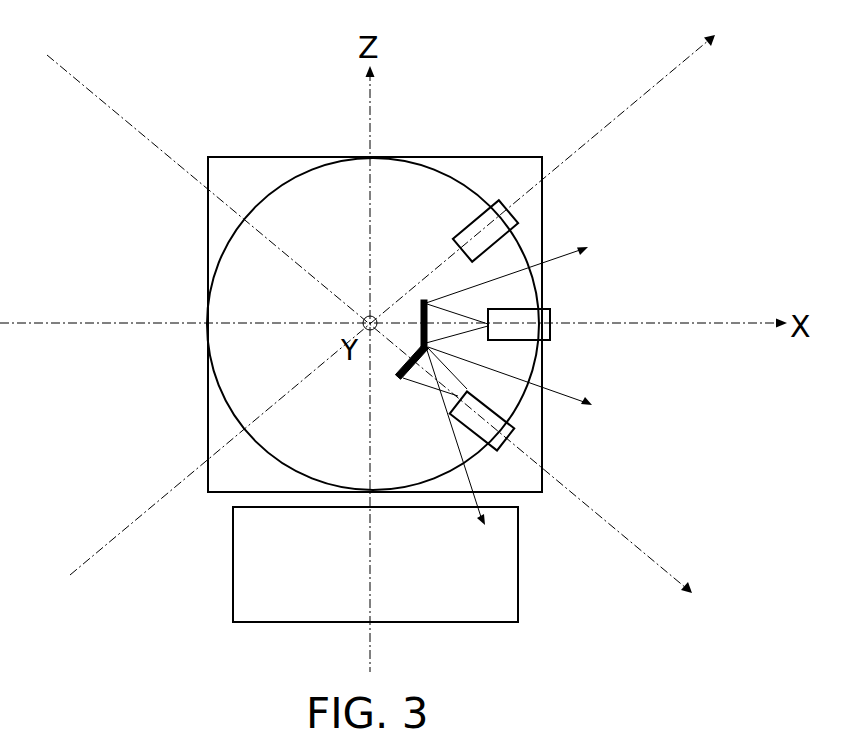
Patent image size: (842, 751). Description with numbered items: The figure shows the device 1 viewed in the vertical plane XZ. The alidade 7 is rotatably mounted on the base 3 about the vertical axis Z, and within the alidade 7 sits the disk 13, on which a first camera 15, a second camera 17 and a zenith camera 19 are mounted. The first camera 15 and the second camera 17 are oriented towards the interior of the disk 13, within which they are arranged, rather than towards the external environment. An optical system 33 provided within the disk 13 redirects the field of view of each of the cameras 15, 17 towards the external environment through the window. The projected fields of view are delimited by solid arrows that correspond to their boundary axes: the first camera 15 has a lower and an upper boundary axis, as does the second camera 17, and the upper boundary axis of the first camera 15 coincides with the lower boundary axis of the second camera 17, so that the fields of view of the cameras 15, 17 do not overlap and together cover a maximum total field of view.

The device 1 is at (150, 241).
The base 3 is at (375, 564).
The alidade 7 is at (375, 324).
The disk 13 is at (373, 324).
The first camera 15 is at (482, 420).
The second camera 17 is at (519, 324).
The zenith camera 19 is at (485, 231).
The optical system 33 is at (398, 311).